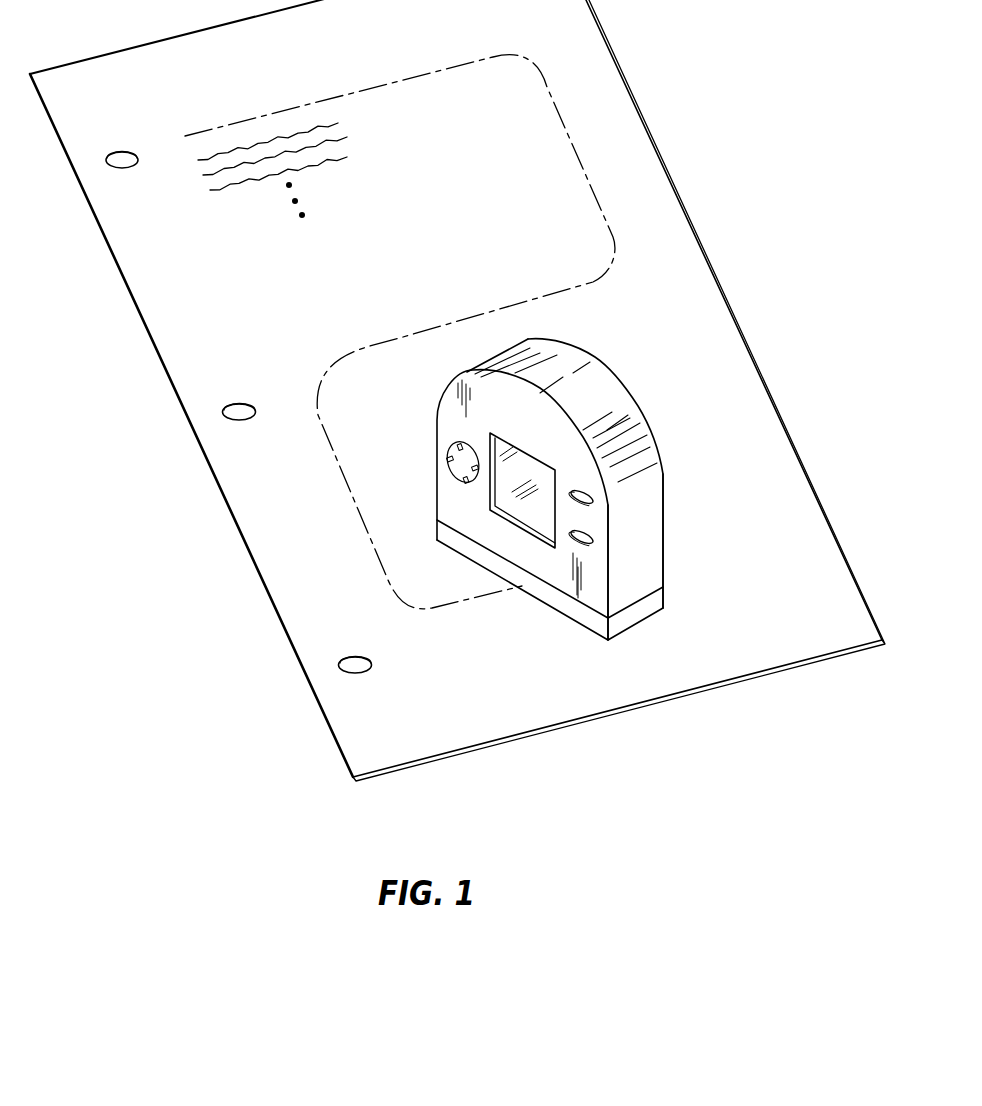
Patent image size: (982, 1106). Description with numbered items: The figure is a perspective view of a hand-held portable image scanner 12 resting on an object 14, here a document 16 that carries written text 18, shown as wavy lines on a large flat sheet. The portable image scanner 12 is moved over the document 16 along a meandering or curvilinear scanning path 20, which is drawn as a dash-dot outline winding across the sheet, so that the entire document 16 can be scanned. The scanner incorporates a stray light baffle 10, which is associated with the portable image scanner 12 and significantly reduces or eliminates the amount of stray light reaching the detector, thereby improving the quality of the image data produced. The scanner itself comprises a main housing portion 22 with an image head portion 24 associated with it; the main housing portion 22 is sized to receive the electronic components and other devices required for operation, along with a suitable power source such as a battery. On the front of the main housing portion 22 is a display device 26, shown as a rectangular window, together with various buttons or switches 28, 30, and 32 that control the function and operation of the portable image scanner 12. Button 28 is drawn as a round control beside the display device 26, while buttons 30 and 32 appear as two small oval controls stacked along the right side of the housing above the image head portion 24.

The stray light baffle 10 is at (553, 501).
The portable image scanner 12 is at (620, 366).
The object 14 is at (699, 223).
The document 16 is at (757, 360).
The written text 18 is at (353, 162).
The scanning path 20 is at (356, 507).
The main housing portion 22 is at (665, 462).
The image head portion 24 is at (665, 598).
The display device 26 is at (490, 495).
The button or switch 28 is at (448, 452).
The button or switch 30 is at (594, 500).
The button or switch 32 is at (594, 540).